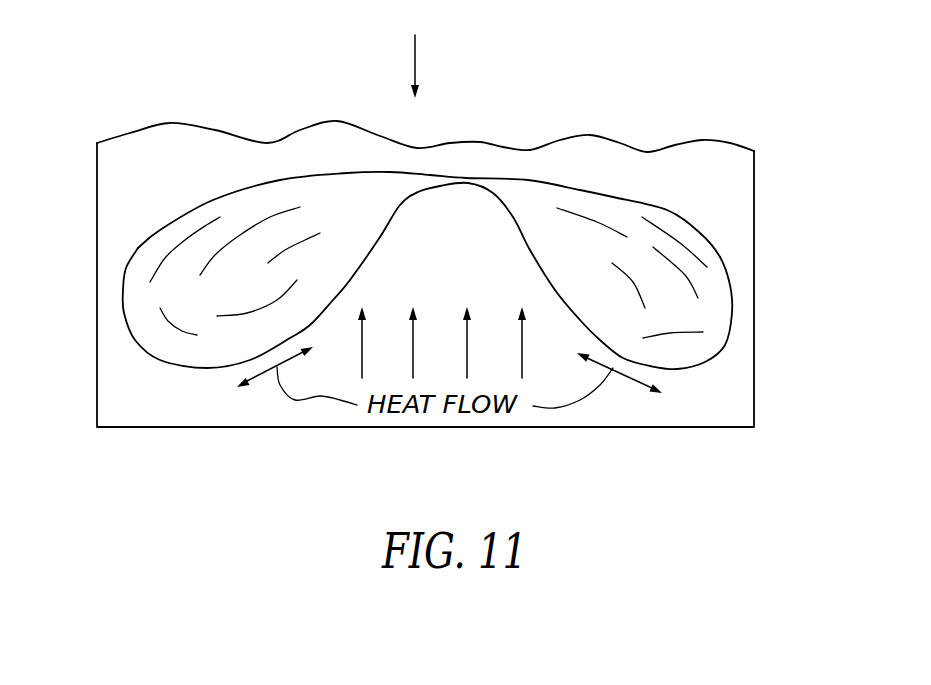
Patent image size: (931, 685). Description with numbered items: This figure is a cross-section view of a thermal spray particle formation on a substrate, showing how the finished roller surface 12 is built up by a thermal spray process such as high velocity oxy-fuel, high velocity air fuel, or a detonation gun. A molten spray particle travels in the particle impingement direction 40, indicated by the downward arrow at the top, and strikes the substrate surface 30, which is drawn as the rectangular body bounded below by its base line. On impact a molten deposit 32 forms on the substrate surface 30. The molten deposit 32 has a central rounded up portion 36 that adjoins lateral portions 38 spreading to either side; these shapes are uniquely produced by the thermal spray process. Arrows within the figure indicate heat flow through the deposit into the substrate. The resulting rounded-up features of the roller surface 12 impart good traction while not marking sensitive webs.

The roller surface 12 is at (678, 143).
The substrate surface 30 is at (628, 418).
The molten deposit 32 is at (528, 178).
The rounded up portion 36 is at (400, 205).
The lateral portions 38 is at (138, 248).
The particle impingement direction 40 is at (415, 53).